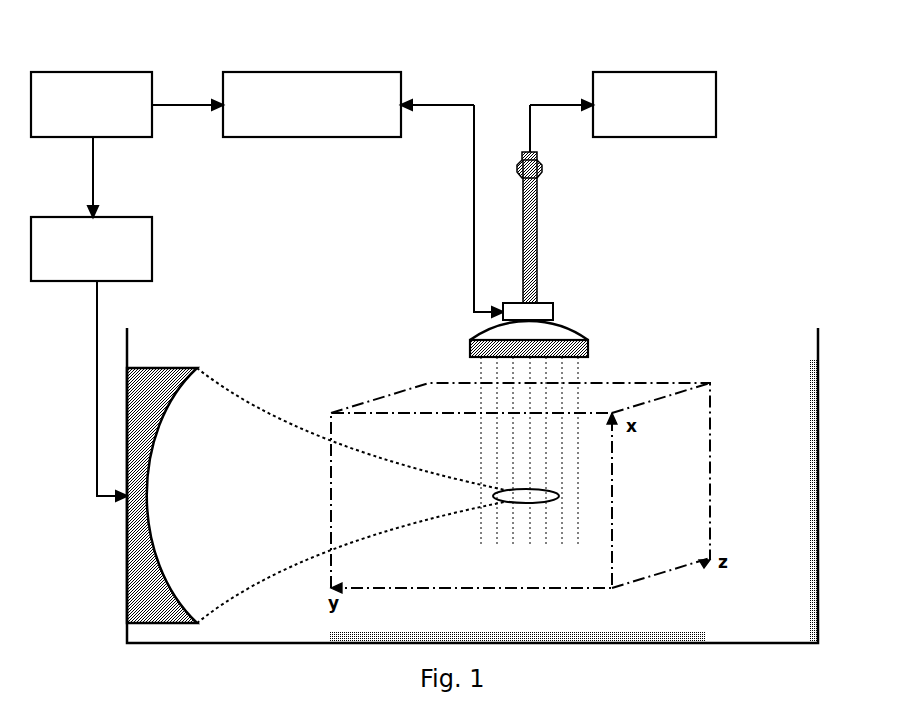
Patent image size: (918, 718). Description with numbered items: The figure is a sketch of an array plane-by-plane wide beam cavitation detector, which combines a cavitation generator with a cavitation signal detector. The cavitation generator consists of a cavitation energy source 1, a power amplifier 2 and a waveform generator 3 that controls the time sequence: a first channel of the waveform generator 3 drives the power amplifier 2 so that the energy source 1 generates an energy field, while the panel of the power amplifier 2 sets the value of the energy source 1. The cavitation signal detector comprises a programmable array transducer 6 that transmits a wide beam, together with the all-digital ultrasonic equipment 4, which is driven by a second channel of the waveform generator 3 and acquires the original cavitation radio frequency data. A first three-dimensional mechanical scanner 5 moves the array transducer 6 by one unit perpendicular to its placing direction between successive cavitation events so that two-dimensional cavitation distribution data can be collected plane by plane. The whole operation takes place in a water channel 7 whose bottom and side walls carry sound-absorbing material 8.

The cavitation energy source 1 is at (175, 385).
The power amplifier 2 is at (152, 248).
The waveform generator 3 is at (152, 72).
The all-digital ultrasonic equipment 4 is at (401, 72).
The first three-dimensional mechanical scanner 5 is at (716, 72).
The array transducer 6 is at (588, 340).
The water channel 7 is at (127, 600).
The sound-absorbing material 8 is at (812, 490).